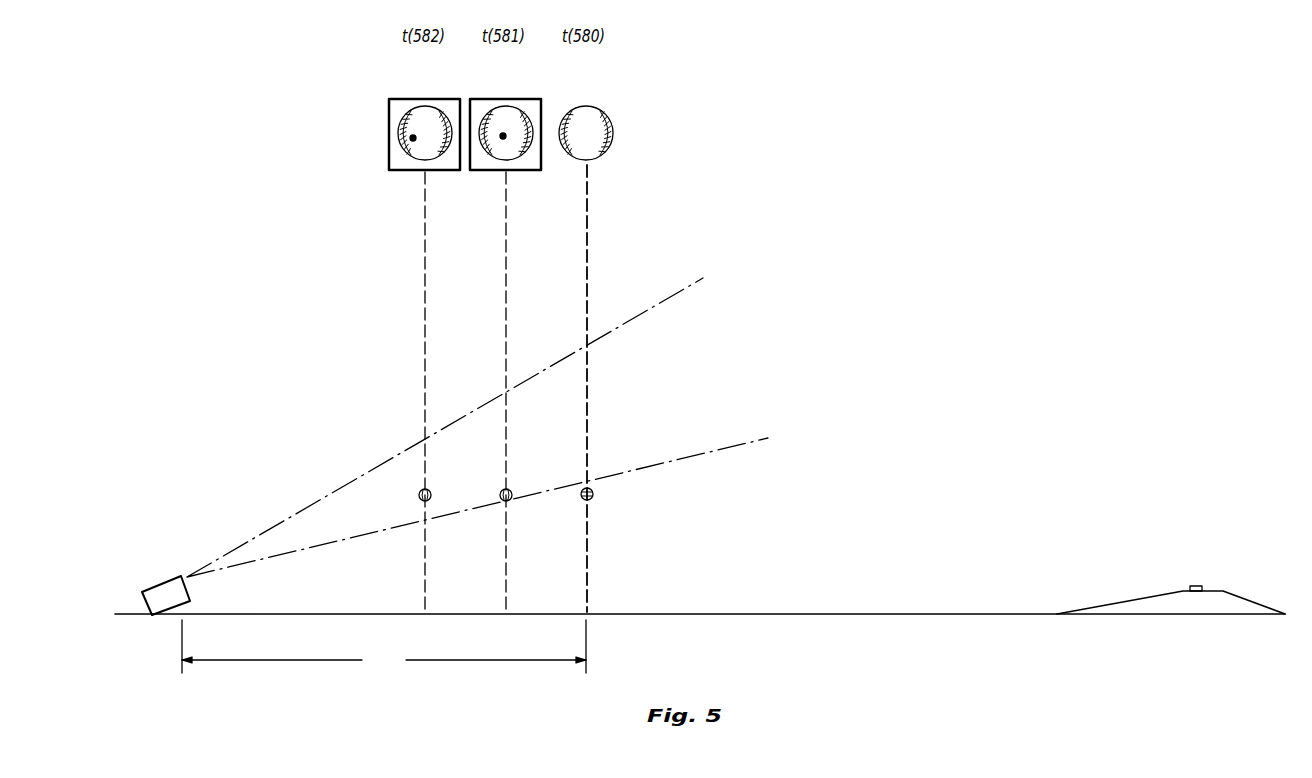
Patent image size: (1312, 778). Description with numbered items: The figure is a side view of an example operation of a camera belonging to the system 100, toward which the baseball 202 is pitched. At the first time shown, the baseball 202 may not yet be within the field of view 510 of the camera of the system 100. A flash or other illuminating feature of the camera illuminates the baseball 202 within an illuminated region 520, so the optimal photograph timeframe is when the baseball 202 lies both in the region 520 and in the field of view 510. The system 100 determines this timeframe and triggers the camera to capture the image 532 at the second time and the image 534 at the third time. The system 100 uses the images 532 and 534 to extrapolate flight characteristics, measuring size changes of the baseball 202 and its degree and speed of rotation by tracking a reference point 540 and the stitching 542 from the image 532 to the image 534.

The system 100 is at (155, 587).
The baseball 202 is at (430, 500).
The field of view 510 is at (676, 292).
The illuminated region 520 is at (384, 646).
The image 532 is at (534, 98).
The image 534 is at (392, 98).
The reference point 540 is at (413, 138).
The stitching 542 is at (402, 130).